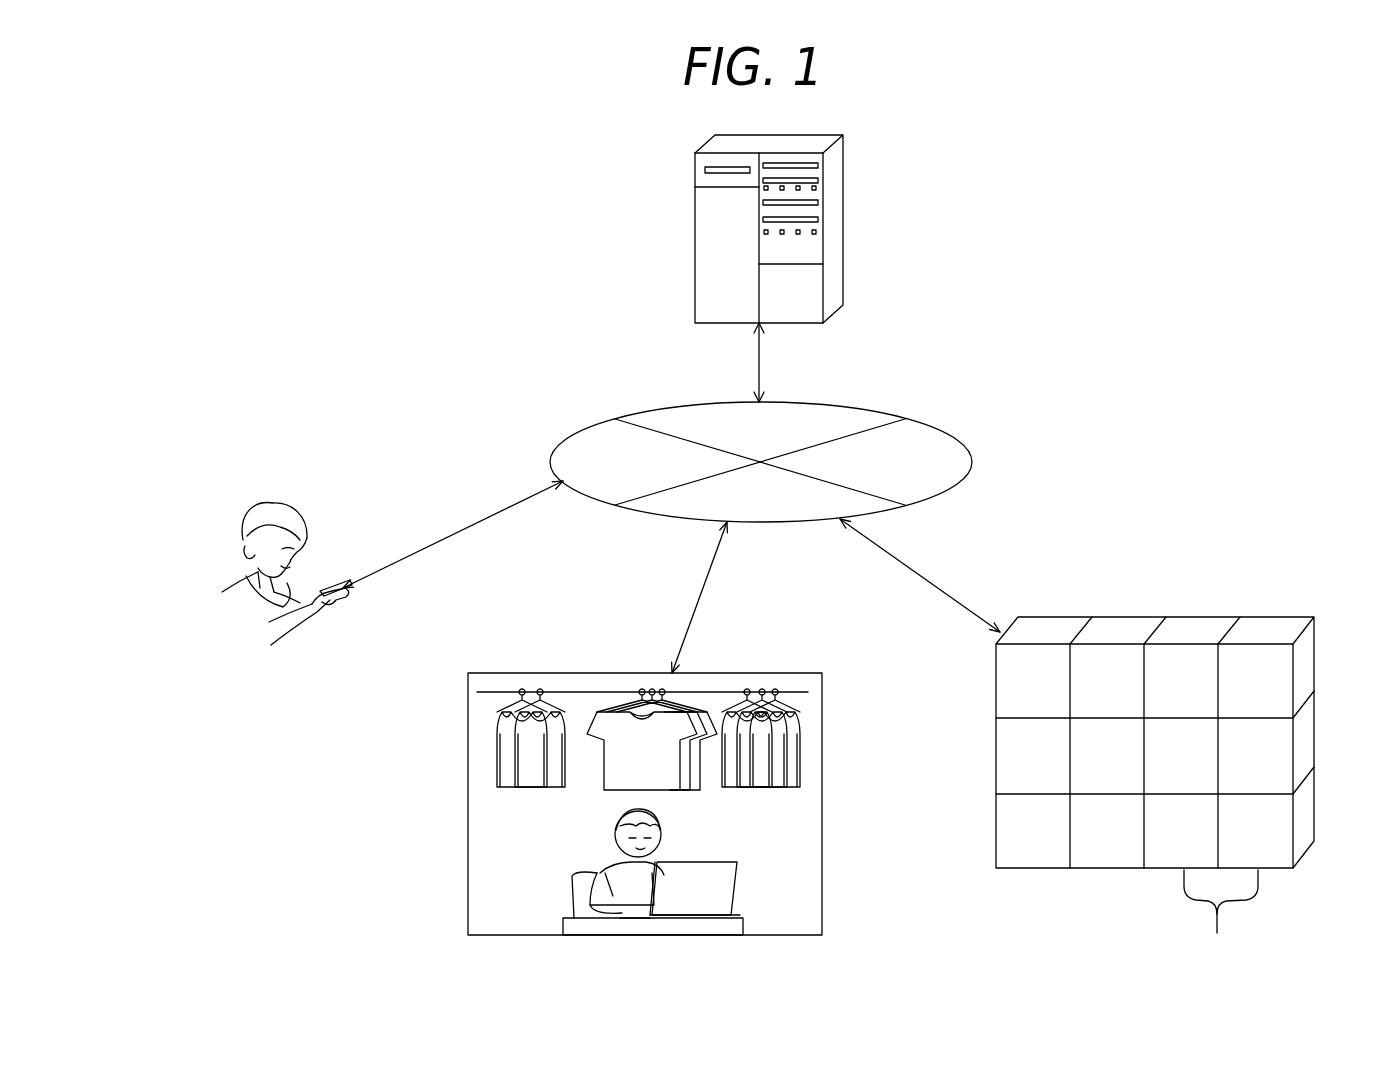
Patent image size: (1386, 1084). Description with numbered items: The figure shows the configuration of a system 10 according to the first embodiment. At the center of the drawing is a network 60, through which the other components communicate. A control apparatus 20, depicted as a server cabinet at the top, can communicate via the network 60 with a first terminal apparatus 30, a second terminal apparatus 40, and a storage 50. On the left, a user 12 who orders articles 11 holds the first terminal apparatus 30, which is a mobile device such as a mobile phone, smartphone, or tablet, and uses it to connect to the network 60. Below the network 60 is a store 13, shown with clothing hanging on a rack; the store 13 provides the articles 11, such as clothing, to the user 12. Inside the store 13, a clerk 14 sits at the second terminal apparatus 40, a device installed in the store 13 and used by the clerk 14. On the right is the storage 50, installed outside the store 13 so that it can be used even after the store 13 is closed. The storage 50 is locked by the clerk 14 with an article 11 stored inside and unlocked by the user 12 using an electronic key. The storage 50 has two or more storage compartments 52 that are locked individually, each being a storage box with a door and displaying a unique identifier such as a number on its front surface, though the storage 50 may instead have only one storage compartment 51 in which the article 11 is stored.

The system 10 is at (1181, 226).
The article 11 is at (743, 767).
The user 12 is at (243, 540).
The store 13 is at (645, 772).
The clerk 14 is at (613, 822).
The control apparatus 20 is at (695, 170).
The first terminal apparatus 30 is at (355, 592).
The second terminal apparatus 40 is at (698, 890).
The storage 50 is at (1155, 757).
The storage compartment 51 is at (1259, 644).
The storage compartments 52 is at (1221, 918).
The network 60 is at (960, 440).